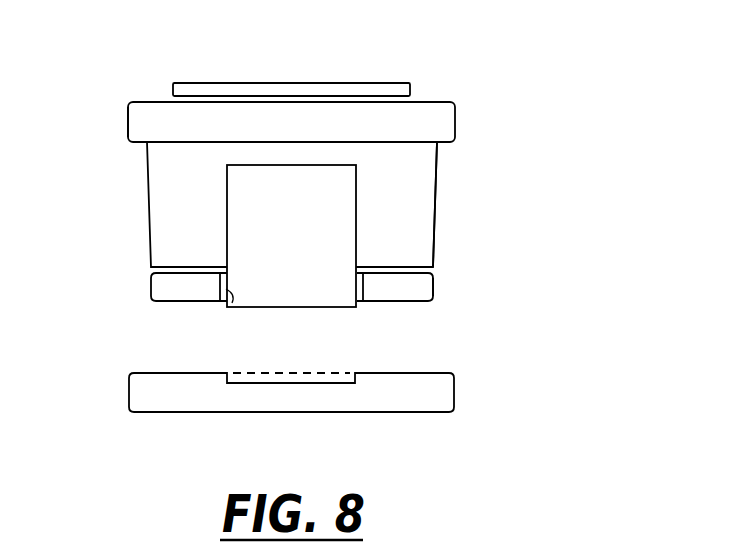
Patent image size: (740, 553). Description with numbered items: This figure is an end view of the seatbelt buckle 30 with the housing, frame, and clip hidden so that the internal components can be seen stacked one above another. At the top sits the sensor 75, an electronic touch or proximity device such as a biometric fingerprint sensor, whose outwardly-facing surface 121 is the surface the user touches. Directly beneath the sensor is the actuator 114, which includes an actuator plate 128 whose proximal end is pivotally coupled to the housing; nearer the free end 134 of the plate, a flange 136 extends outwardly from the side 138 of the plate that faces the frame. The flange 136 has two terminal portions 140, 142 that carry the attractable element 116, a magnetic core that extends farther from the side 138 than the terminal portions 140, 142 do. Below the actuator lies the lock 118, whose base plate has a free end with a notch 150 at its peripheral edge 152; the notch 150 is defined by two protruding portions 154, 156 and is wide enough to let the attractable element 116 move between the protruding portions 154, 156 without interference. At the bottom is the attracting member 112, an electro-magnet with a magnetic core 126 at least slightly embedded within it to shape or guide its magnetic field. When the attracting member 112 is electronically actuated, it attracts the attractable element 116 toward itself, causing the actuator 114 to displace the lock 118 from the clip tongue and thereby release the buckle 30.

The buckle 30 is at (608, 81).
The sensor 75 is at (282, 81).
The attracting member 112 is at (462, 392).
The actuator 114 is at (468, 106).
The attractable element 116 is at (247, 193).
The lock 118 is at (440, 287).
The outwardly-facing surface 121 is at (358, 83).
The magnetic core 126 is at (292, 380).
The actuator plate 128 is at (142, 125).
The free end 134 is at (145, 109).
The flange 136 is at (418, 203).
The side 138 is at (445, 140).
The terminal portion 140 is at (192, 250).
The terminal portion 142 is at (397, 252).
The notch 150 is at (232, 303).
The peripheral edge 152 is at (380, 292).
The protruding portion 154 is at (413, 287).
The protruding portion 156 is at (163, 285).